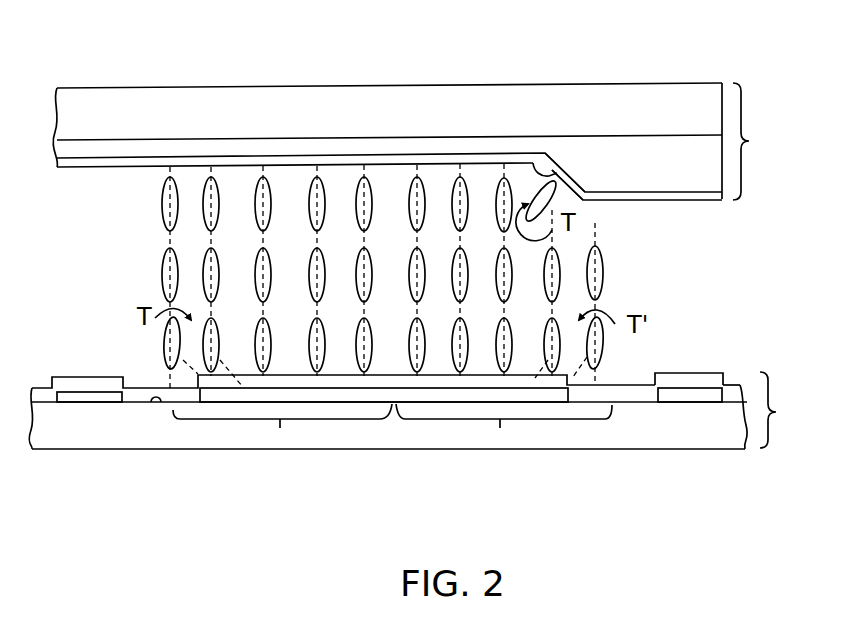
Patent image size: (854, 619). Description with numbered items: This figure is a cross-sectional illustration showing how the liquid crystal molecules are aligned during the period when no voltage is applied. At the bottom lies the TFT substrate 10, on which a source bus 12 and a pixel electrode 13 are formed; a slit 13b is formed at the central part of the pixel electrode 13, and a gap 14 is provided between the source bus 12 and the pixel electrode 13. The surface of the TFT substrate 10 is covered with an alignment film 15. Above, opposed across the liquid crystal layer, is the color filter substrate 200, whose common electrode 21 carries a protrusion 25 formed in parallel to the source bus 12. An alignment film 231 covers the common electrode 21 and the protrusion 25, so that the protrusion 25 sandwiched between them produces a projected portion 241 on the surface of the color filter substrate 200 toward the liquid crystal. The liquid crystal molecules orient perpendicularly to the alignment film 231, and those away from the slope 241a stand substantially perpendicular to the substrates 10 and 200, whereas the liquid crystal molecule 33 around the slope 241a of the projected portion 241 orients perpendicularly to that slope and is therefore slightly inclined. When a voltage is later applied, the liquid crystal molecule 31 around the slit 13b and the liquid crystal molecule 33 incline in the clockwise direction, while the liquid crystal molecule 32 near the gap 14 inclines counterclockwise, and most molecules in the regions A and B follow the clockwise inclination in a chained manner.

The color filter substrate 200 is at (436, 158).
The common electrode 21 is at (615, 143).
The protrusion 25 is at (692, 165).
The alignment film 231 is at (673, 195).
The projected portion 241 is at (667, 212).
The slope 241a is at (523, 160).
The liquid crystal molecule 31 is at (168, 349).
The liquid crystal molecule 32 is at (603, 353).
The liquid crystal molecule 33 is at (557, 193).
The TFT substrate 10 is at (426, 419).
The source bus 12 is at (692, 393).
The pixel electrode 13 is at (93, 400).
The slit 13b is at (153, 403).
The gap 14 is at (621, 386).
The alignment film 15 is at (707, 380).
The region A is at (280, 428).
The region B is at (500, 428).